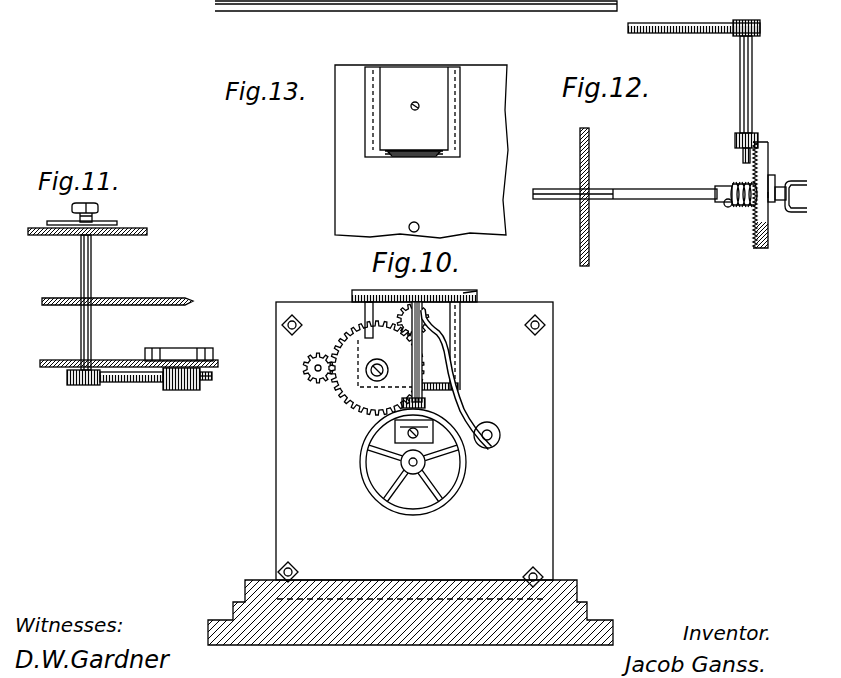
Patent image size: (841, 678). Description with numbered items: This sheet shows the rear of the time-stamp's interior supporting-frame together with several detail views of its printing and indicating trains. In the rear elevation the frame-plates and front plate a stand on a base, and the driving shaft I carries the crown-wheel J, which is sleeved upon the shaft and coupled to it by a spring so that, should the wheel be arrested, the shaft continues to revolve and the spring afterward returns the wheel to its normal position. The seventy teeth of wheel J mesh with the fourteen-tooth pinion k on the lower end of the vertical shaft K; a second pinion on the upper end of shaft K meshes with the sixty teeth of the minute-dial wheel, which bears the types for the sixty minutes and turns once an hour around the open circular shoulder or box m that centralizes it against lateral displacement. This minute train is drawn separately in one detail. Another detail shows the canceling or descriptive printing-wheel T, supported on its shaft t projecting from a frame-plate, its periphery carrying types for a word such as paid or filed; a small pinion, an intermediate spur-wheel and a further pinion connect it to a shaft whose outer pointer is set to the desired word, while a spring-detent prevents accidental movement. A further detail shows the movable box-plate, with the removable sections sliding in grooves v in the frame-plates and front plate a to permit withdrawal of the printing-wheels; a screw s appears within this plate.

In FIG. 10, the base A is at (410, 473).
In FIG. 12, the shaft I is at (632, 197).
In FIG. 10, the shaft I is at (410, 466).
In FIG. 12, the crown-wheel J is at (764, 195).
In FIG. 10, the crown-wheel J is at (401, 473).
In FIG. 12, the shaft K is at (755, 76).
In FIG. 12, the pinion k is at (758, 134).
In FIG. 10, the pinion k is at (426, 402).
In FIG. 10, the open circular shoulder or box m is at (414, 289).
In FIG. 11, the printing-wheel T is at (179, 346).
In FIG. 11, the shaft t is at (180, 392).
In FIG. 10, the front plate a is at (382, 362).
In FIG. 13, the grooves v is at (373, 124).
In FIG. 13, the screw s is at (415, 111).